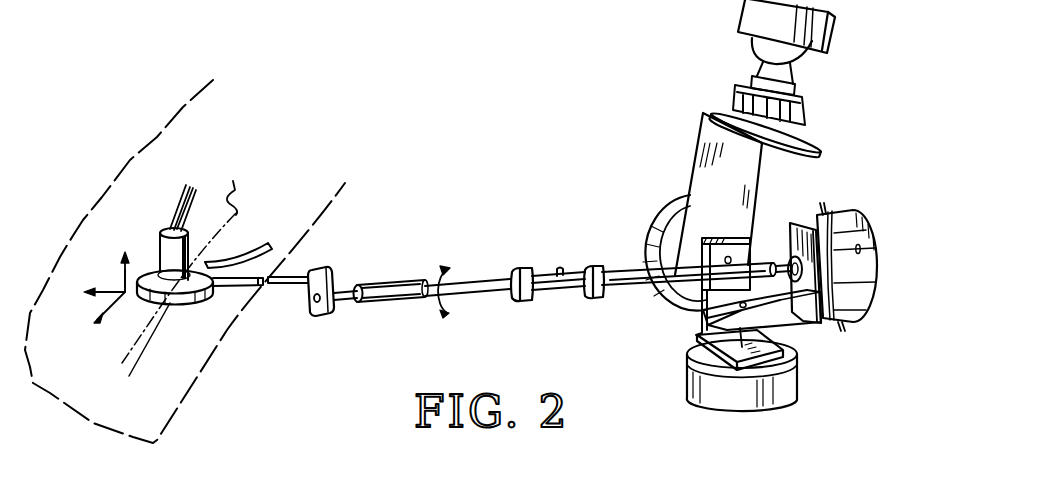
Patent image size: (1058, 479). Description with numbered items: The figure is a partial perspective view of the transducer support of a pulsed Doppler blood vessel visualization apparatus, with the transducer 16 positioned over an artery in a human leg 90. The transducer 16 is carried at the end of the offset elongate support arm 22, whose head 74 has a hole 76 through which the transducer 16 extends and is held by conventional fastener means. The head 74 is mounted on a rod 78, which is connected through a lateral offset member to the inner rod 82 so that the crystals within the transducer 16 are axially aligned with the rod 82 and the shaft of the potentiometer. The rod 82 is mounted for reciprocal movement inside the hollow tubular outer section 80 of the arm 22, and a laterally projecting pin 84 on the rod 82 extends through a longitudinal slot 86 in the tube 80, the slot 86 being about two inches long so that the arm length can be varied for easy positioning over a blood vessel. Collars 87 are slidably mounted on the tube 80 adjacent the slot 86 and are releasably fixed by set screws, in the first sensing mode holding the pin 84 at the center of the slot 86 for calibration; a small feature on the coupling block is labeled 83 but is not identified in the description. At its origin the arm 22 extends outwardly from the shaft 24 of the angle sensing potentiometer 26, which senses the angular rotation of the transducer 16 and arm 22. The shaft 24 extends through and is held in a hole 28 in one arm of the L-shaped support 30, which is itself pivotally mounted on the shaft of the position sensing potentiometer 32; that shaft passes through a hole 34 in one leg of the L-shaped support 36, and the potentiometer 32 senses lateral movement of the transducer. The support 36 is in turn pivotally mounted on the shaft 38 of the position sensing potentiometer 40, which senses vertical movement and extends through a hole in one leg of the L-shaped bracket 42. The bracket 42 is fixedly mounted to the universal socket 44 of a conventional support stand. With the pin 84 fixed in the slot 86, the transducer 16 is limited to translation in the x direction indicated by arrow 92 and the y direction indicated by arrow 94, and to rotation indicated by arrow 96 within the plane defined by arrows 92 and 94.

The transducer 16 is at (166, 230).
The offset elongate support arm 22 is at (480, 274).
The shaft 24 is at (788, 263).
The angle sensing potentiometer 26 is at (850, 233).
The hole 28 is at (791, 223).
The L-shaped support 30 is at (800, 320).
The position sensing potentiometer 32 is at (730, 401).
The hole 34 is at (700, 306).
The L-shaped support 36 is at (697, 333).
The shaft 38 is at (728, 256).
The position sensing potentiometer 40 is at (663, 203).
The L-shaped bracket 42 is at (712, 130).
The universal socket 44 is at (758, 18).
The head 74 is at (180, 300).
The hole 76 is at (198, 294).
The rod 78 is at (307, 266).
The hollow tubular outer section 80 is at (497, 323).
The rod 82 is at (345, 300).
The hole 83 is at (312, 297).
The laterally projecting pin 84 is at (560, 266).
The longitudinal slot 86 is at (545, 278).
The collars 87 is at (513, 267).
The human leg 90 is at (246, 126).
The arrow 92 is at (150, 300).
The arrow 94 is at (127, 273).
The arrow 96 is at (431, 268).